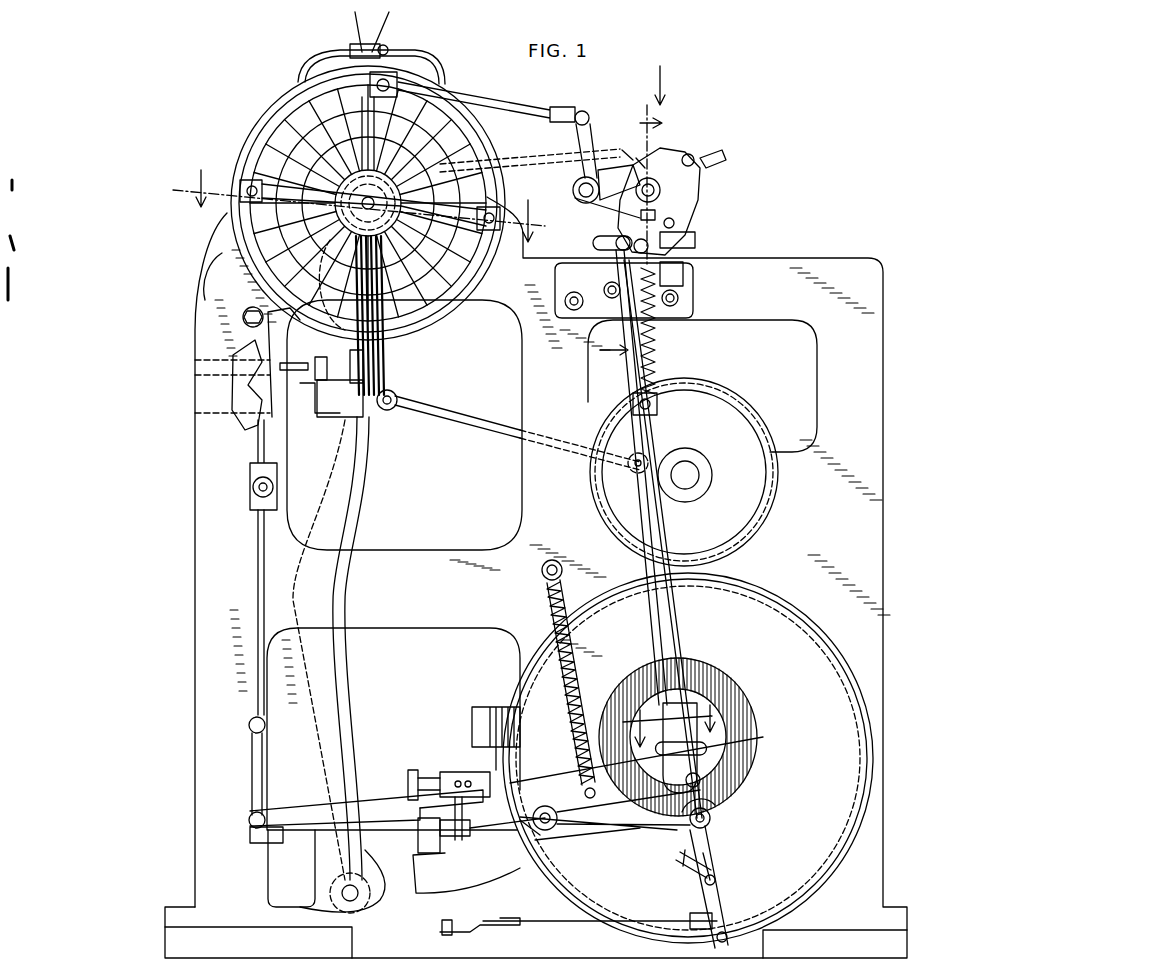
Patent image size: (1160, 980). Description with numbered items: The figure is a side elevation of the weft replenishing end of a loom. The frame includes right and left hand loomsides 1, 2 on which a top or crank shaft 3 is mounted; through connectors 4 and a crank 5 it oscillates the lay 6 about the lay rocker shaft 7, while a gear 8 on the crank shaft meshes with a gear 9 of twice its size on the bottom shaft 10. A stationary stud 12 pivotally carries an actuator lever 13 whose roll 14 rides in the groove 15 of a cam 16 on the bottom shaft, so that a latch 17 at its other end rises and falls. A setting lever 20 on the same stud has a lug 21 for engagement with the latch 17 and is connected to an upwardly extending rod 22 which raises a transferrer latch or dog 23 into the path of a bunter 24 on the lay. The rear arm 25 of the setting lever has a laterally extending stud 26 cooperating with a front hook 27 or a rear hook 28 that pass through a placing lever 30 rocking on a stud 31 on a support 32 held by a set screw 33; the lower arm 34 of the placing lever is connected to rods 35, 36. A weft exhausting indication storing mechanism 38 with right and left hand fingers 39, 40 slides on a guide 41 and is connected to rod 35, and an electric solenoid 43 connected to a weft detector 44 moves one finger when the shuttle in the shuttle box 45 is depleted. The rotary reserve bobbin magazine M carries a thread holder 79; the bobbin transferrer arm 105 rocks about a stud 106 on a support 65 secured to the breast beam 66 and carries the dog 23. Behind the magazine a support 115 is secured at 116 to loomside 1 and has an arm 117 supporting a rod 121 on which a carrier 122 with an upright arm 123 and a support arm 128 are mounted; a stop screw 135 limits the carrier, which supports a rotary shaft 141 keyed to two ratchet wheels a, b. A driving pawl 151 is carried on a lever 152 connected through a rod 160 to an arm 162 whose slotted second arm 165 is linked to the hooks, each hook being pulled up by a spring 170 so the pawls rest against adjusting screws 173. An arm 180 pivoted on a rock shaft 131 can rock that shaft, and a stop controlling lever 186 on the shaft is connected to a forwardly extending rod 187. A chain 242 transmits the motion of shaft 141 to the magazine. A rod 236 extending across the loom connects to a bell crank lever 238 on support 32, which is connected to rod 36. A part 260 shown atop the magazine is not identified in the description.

The right hand loomside 1 is at (204, 624).
The left hand loomside 2 is at (176, 604).
The reserve bobbin magazine M is at (270, 112).
The thread holder 79 is at (340, 216).
The fan handle 260 is at (358, 46).
The forwardly extending rod 187 is at (505, 112).
The stop controlling lever 186 is at (580, 136).
The chain 242 is at (508, 166).
The rock shaft 131 is at (573, 188).
The arm 180 is at (614, 168).
The driving pawl 151 is at (672, 152).
The lever 152 is at (694, 155).
The adjusting screws 173 is at (716, 160).
The upright arm 123 is at (662, 188).
The rotary shaft 141 is at (658, 214).
The support arm 128 is at (676, 226).
The carrier 122 is at (697, 244).
The rod 121 is at (650, 250).
The stop screw 135 is at (684, 278).
The rod 160 is at (600, 206).
The second arm 165 is at (600, 243).
The arm 162 is at (620, 248).
The support 115 is at (556, 272).
The securing point 116 is at (592, 299).
The horizontally extending arm 117 is at (680, 304).
The spring 170 is at (656, 340).
The actuator lever 13 is at (441, 902).
The stationary stud 12 is at (544, 806).
The support 65 is at (208, 275).
The stud 106 is at (243, 317).
The bobbin transferrer arm 105 is at (278, 315).
The weft detector 44 is at (296, 372).
The breast beam 66 is at (205, 397).
The shuttle box 45 is at (350, 372).
The bunter 24 is at (315, 398).
The lay 6 is at (330, 416).
The transferrer latch or dog 23 is at (280, 440).
The rod 22 is at (258, 590).
The connectors 4 is at (494, 426).
The lay rocker shaft 7 is at (360, 895).
The gear 8 is at (772, 500).
The top or crank shaft 3 is at (690, 467).
The crank 5 is at (650, 456).
The gear 9 is at (768, 602).
The cam 16 is at (700, 666).
The groove 15 is at (742, 763).
The bottom shaft 10 is at (648, 728).
The rear hook 28 is at (702, 750).
The front hook 27 is at (660, 745).
The laterally extending stud 26 is at (702, 780).
The rear arm 25 is at (582, 790).
The electric solenoid 43 is at (488, 715).
The guide 41 is at (410, 772).
The weft exhausting indication storing mechanism 38 is at (450, 772).
The setting lever 20 is at (380, 808).
The lug 21 is at (400, 821).
The right hand finger 39 is at (465, 812).
The latch 17 is at (426, 834).
The left hand finger 40 is at (455, 838).
The set screw 33 is at (518, 835).
The support 32 is at (620, 832).
The roll 14 is at (672, 824).
The placing lever 30 is at (682, 832).
The stud 31 is at (710, 818).
The lower arm 34 is at (712, 845).
The rod 35 is at (705, 872).
The rod 36 is at (556, 923).
The bell crank lever 238 is at (470, 930).
The rod 236 is at (448, 936).
The ratchet wheel a is at (626, 150).
The ratchet wheel b is at (640, 158).